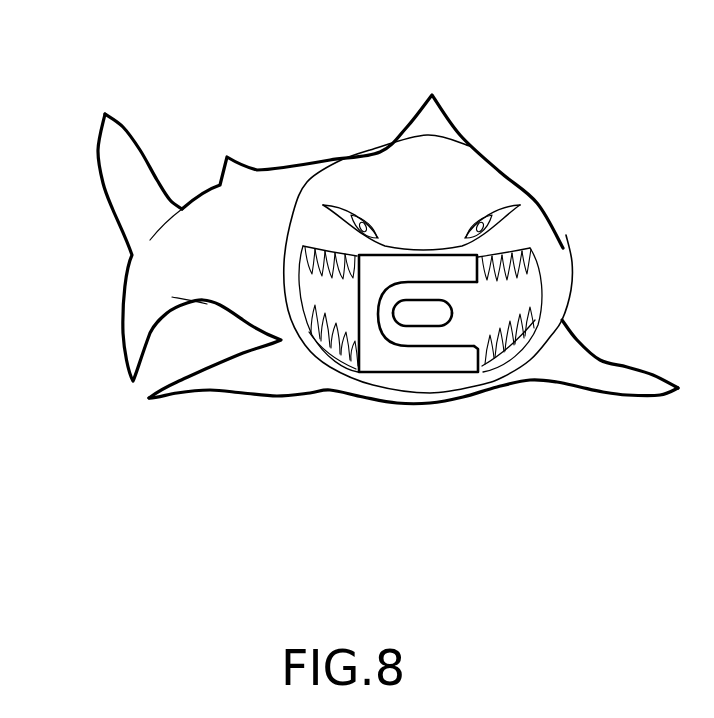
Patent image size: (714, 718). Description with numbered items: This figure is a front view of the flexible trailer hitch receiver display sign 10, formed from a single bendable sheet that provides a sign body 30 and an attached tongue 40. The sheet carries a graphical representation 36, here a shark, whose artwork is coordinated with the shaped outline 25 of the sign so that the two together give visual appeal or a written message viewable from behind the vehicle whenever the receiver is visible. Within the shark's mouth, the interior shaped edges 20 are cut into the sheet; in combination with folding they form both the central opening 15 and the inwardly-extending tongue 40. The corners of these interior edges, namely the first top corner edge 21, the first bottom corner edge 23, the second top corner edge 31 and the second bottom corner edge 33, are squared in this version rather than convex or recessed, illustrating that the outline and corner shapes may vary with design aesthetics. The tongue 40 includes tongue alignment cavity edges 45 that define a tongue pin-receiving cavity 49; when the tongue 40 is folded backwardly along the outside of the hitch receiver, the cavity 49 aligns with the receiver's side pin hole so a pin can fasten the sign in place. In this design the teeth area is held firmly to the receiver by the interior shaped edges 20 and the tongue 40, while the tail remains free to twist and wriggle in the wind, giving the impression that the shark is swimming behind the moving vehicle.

The flexible trailer hitch receiver display sign 10 is at (563, 128).
The central opening 15 is at (390, 272).
The interior shaped edges 20 is at (482, 262).
The first top corner edge 21 is at (340, 225).
The first bottom corner edge 23 is at (358, 372).
The shaped outline 25 is at (412, 122).
The sign body 30 is at (242, 262).
The second top corner edge 31 is at (482, 260).
The second bottom corner edge 33 is at (484, 374).
The graphical representation 36 is at (227, 227).
The tongue 40 is at (467, 304).
The tongue alignment cavity edges 45 is at (408, 327).
The tongue pin-receiving cavity 49 is at (413, 312).